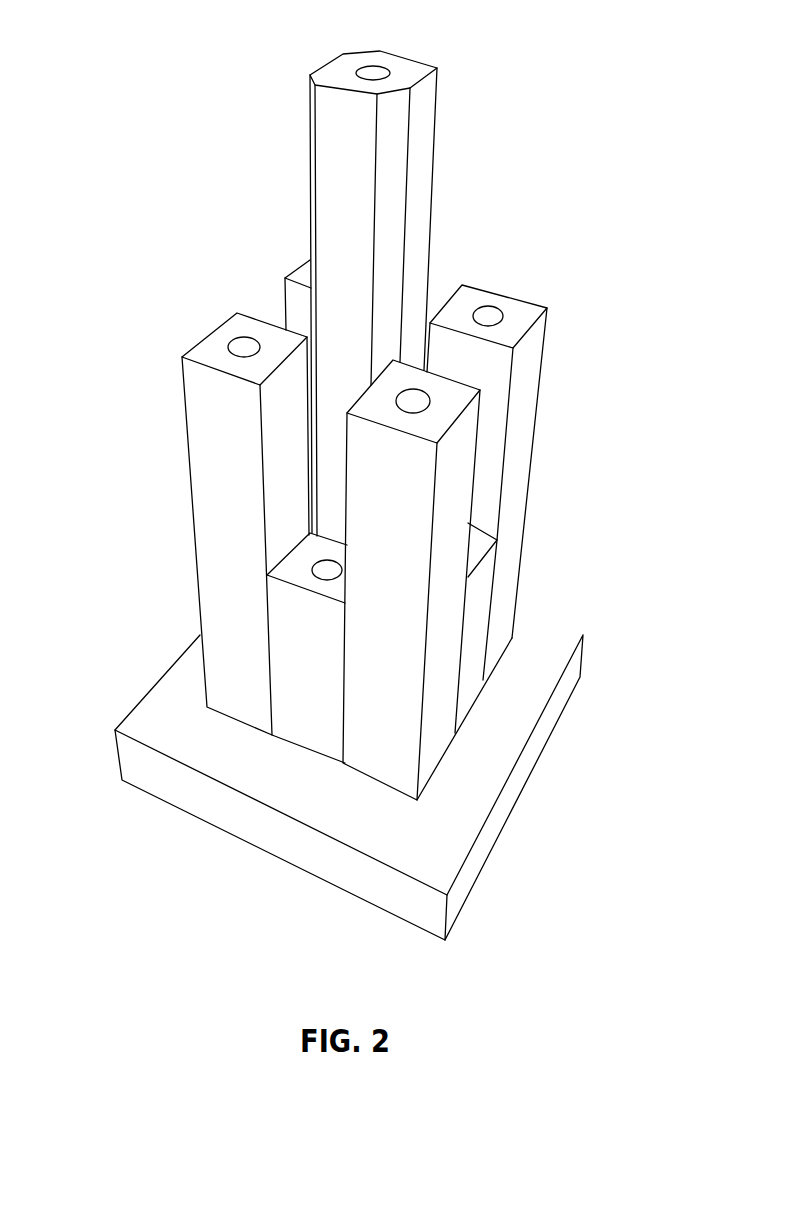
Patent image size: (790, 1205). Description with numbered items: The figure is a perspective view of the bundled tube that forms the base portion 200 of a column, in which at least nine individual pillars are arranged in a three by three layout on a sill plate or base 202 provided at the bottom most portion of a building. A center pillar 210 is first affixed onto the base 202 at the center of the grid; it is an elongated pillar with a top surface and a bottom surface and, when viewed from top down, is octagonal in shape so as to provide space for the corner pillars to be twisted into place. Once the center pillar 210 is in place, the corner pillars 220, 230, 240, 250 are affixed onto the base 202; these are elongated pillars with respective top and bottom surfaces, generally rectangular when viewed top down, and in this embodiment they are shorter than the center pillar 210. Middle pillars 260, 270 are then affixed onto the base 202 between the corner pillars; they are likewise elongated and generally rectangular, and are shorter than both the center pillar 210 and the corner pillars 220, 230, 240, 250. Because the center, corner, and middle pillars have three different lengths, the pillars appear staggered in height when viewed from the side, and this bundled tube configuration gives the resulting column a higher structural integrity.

The base portion 200 is at (137, 137).
The base 202 is at (213, 810).
The center pillar 210 is at (420, 209).
The corner pillar 220 is at (205, 492).
The corner pillar 230 is at (450, 522).
The corner pillar 240 is at (525, 407).
The corner pillar 250 is at (298, 310).
The middle pillar 260 is at (300, 625).
The middle pillar 270 is at (480, 605).